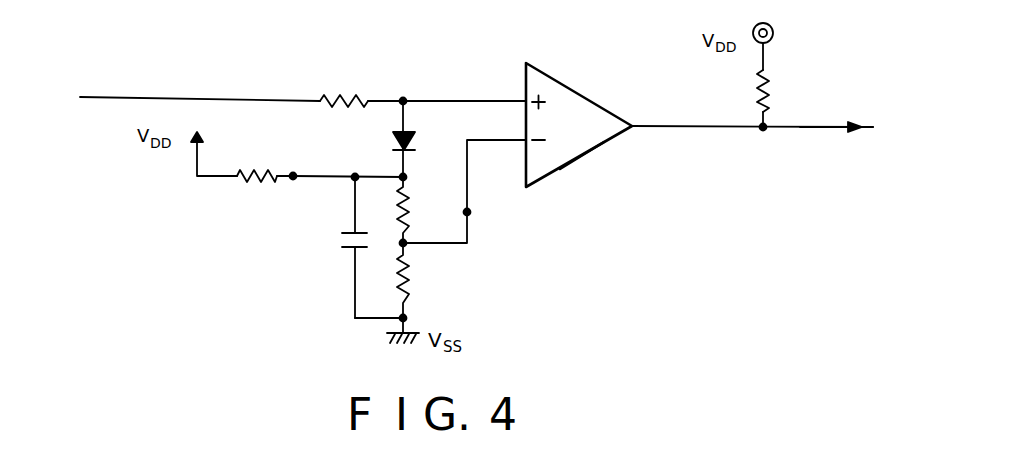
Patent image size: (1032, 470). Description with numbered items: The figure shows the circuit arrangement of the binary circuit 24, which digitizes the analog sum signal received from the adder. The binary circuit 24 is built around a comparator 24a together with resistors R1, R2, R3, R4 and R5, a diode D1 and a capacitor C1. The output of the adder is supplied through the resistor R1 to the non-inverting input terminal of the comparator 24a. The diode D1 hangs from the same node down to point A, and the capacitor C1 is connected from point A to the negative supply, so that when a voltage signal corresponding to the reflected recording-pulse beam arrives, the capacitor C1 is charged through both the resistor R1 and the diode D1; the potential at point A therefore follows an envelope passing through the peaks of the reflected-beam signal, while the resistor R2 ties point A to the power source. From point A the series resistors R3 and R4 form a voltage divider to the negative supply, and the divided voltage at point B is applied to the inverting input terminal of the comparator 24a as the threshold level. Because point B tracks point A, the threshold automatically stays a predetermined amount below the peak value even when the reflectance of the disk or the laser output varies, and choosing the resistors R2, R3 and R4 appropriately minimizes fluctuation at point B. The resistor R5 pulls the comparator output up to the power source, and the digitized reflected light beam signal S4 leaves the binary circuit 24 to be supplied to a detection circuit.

The binary circuit 24 is at (560, 72).
The comparator 24a is at (588, 147).
The resistor R1 is at (344, 84).
The resistor R2 is at (257, 163).
The resistor R3 is at (419, 210).
The resistor R4 is at (419, 280).
The resistor R5 is at (777, 91).
The capacitor C1 is at (342, 247).
The diode D1 is at (387, 139).
The point A is at (293, 180).
The point B is at (471, 212).
The reflected light beam signal S4 is at (827, 127).